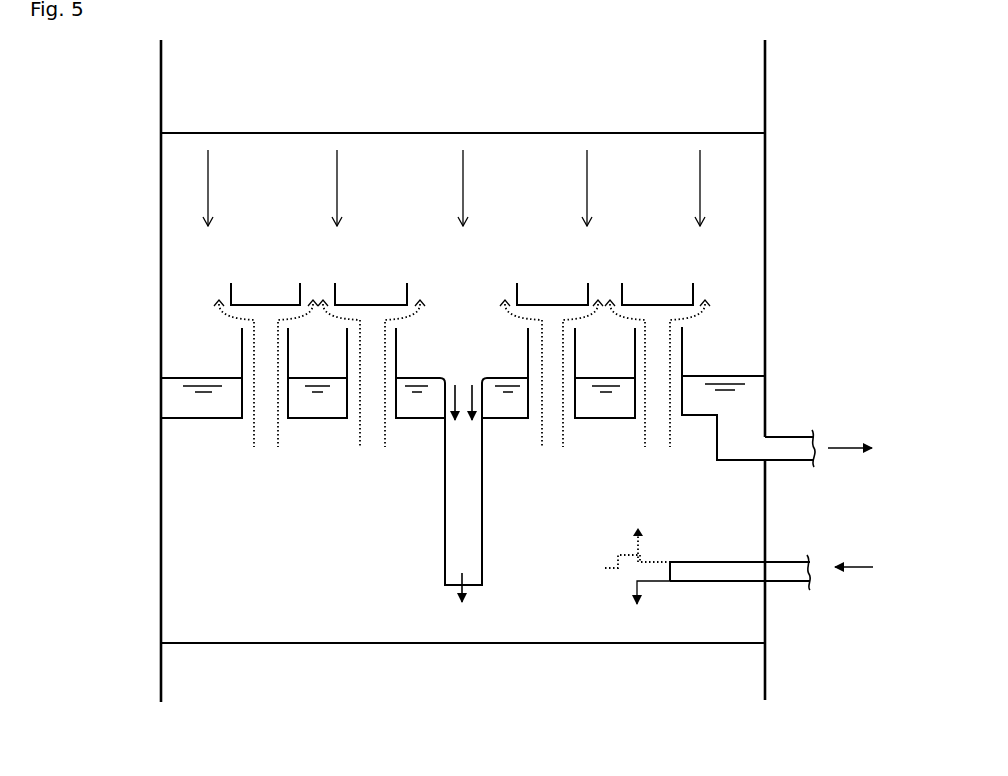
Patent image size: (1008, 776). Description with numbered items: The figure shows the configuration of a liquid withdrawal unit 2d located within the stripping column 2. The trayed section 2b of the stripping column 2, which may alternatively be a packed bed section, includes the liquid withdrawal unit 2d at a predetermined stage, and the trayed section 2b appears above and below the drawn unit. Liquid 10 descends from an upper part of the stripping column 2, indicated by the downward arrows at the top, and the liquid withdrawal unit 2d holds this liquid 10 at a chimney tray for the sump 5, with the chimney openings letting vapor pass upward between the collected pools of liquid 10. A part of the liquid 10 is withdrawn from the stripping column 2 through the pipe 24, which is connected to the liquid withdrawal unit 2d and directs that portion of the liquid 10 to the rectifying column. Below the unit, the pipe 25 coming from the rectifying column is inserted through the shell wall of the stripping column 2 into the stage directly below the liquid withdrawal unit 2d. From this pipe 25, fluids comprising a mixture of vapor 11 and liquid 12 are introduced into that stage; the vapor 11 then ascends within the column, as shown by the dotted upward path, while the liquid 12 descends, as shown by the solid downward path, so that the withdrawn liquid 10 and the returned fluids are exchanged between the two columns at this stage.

The stripping column 2 is at (768, 156).
The trayed section 2b is at (472, 98).
The liquid withdrawal unit 2d is at (735, 300).
The sump 5 is at (205, 419).
The liquid 10 is at (588, 186).
The vapor 11 is at (563, 420).
The liquid 12 is at (637, 594).
The pipe 24 is at (780, 437).
The pipe 25 is at (787, 583).